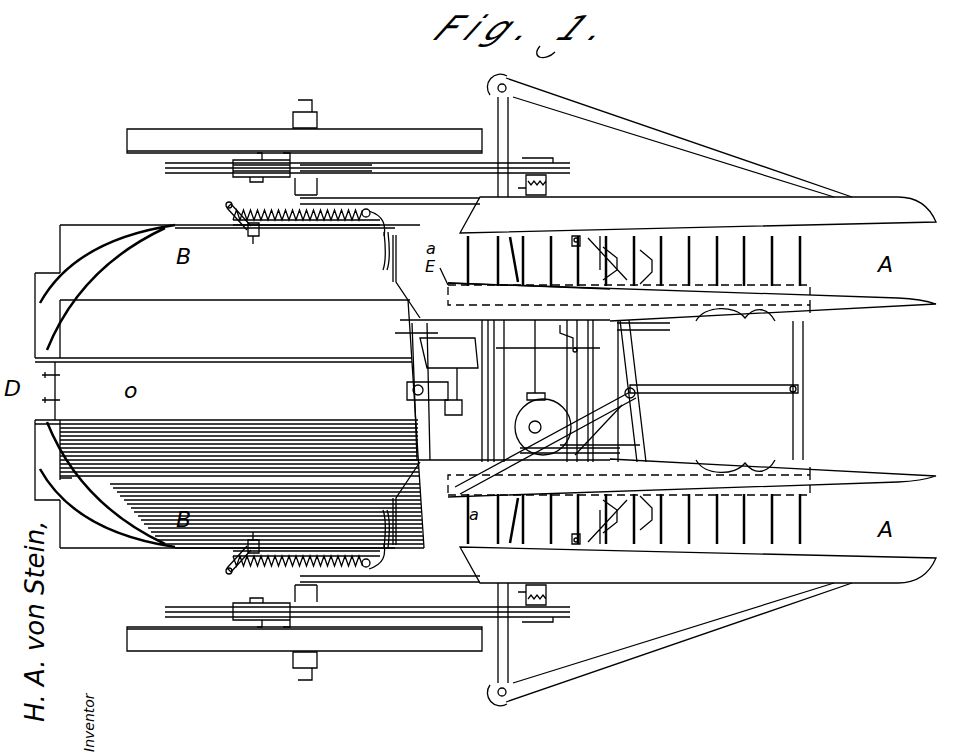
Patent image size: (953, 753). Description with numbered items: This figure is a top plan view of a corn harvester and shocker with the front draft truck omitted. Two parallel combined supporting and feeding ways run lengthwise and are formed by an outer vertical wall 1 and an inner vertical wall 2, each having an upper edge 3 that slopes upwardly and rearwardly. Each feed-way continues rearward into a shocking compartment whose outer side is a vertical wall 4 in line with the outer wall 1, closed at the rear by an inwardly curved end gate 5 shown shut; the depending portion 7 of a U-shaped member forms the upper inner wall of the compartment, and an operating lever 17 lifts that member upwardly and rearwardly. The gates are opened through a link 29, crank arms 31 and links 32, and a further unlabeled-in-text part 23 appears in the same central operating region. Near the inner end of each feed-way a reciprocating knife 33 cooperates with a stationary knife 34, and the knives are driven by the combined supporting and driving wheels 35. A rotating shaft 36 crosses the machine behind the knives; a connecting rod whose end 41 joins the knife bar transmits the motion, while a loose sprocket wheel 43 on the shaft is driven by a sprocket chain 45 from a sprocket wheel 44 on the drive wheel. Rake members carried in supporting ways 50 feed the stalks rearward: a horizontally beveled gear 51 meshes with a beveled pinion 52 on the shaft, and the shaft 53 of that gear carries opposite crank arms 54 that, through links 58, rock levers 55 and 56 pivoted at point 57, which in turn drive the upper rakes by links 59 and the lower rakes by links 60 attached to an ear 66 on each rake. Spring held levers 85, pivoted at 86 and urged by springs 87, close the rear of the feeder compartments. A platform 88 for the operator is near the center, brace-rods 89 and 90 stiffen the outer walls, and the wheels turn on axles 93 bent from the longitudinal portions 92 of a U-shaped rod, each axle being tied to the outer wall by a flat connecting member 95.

The outer vertical wall 1 is at (826, 228).
The inner vertical wall 2 is at (838, 300).
The upper edge 3 is at (765, 212).
The vertical wall 4 is at (342, 156).
The end gate 5 is at (162, 224).
The depending portion 7 is at (288, 418).
The operating lever 17 is at (458, 391).
The bracket 23 is at (453, 424).
The link 29 is at (405, 388).
The crank arm 31 is at (225, 206).
The link 32 is at (247, 238).
The reciprocating knife 33 is at (588, 245).
The stationary knife 34 is at (625, 250).
The combined supporting and driving wheel 35 is at (368, 642).
The rotating shaft 36 is at (500, 332).
The connecting rod end 41 is at (455, 323).
The loose sprocket wheel 43 is at (556, 168).
The sprocket wheel 44 is at (190, 162).
The sprocket chain 45 is at (432, 166).
The supporting way 50 is at (642, 445).
The horizontally beveled gear 51 is at (520, 430).
The beveled pinion 52 is at (553, 387).
The shaft 53 is at (495, 468).
The crank arm 54 is at (530, 458).
The lever 55 is at (660, 386).
The lever 56 is at (636, 347).
The pivot point 57 is at (634, 398).
The link 58 is at (585, 462).
The link 59 is at (715, 325).
The link 60 is at (640, 370).
The inwardly projecting ear 66 is at (755, 316).
The spring held lever 85 is at (380, 258).
The pivot 86 is at (365, 222).
The spring 87 is at (275, 212).
The platform 88 is at (395, 333).
The brace-rod 89 is at (510, 138).
The brace-rod 90 is at (580, 118).
The longitudinally extending portion 92 is at (398, 200).
The axle 93 is at (312, 106).
The flat connecting member 95 is at (278, 166).